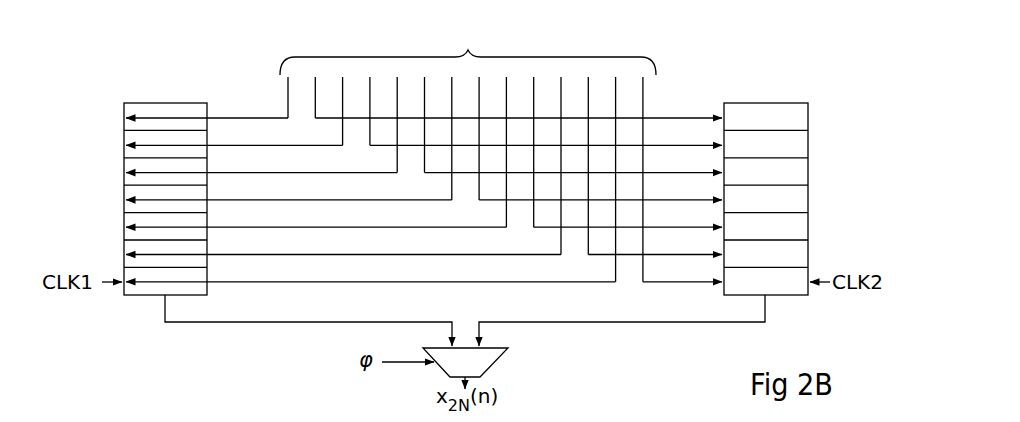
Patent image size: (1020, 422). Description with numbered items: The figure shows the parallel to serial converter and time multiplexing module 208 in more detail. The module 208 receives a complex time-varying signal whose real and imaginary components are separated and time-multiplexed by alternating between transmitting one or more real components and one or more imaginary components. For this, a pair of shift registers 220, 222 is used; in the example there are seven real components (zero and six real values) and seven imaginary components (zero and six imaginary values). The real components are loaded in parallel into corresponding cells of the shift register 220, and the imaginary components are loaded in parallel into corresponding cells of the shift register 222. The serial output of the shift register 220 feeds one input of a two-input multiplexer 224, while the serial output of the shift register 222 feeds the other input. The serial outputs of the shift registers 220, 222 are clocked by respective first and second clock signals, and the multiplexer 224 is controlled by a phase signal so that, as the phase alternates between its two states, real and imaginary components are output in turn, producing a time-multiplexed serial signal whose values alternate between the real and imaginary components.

The parallel to serial converter and time multiplexing module 208 is at (691, 77).
The shift register 220 is at (121, 126).
The shift register 222 is at (811, 118).
The two-input multiplexer 224 is at (485, 362).